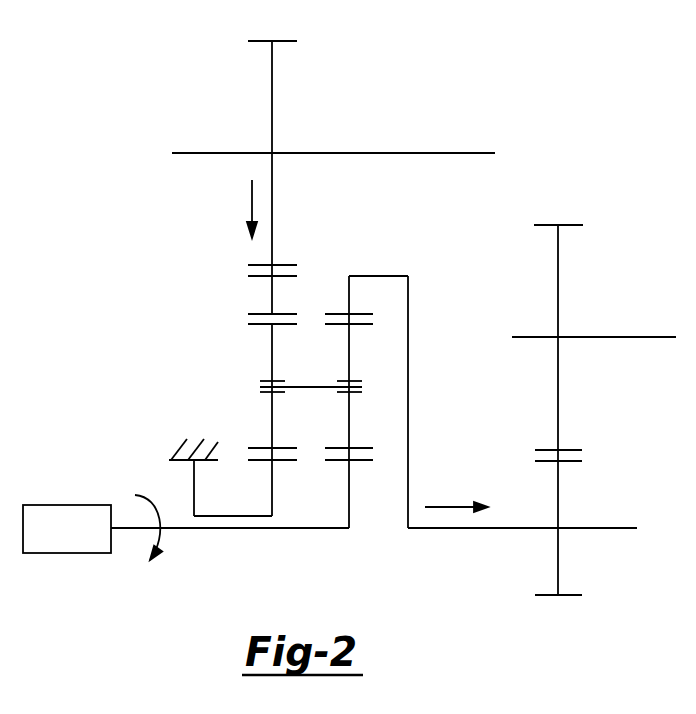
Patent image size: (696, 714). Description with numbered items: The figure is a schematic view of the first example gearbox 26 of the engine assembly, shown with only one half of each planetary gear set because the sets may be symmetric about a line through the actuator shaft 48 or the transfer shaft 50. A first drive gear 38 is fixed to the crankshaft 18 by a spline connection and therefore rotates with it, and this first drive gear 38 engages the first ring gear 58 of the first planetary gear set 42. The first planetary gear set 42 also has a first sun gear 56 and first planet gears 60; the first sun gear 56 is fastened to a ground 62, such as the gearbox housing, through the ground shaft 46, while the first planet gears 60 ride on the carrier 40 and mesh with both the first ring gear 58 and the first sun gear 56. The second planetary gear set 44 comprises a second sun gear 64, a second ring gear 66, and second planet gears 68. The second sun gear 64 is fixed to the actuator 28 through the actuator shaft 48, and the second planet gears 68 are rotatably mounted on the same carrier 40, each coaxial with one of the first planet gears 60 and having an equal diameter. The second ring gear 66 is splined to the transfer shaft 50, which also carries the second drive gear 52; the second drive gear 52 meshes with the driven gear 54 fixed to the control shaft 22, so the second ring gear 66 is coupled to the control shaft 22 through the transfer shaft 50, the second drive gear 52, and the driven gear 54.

The crankshaft 18 is at (468, 153).
The control shaft 22 is at (662, 337).
The gearbox 26 is at (145, 215).
The actuator 28 is at (50, 505).
The first drive gear 38 is at (272, 79).
The carrier 40 is at (305, 385).
The first planetary gear set 42 is at (238, 276).
The second planetary gear set 44 is at (373, 270).
The ground shaft 46 is at (194, 478).
The actuator shaft 48 is at (298, 528).
The transfer shaft 50 is at (622, 528).
The second drive gear 52 is at (558, 570).
The driven gear 54 is at (558, 398).
The first sun gear 56 is at (273, 487).
The first ring gear 58 is at (272, 295).
The first planet gear 60 is at (272, 352).
The ground 62 is at (182, 460).
The second sun gear 64 is at (350, 510).
The second ring gear 66 is at (408, 400).
The second planet gear 68 is at (349, 426).